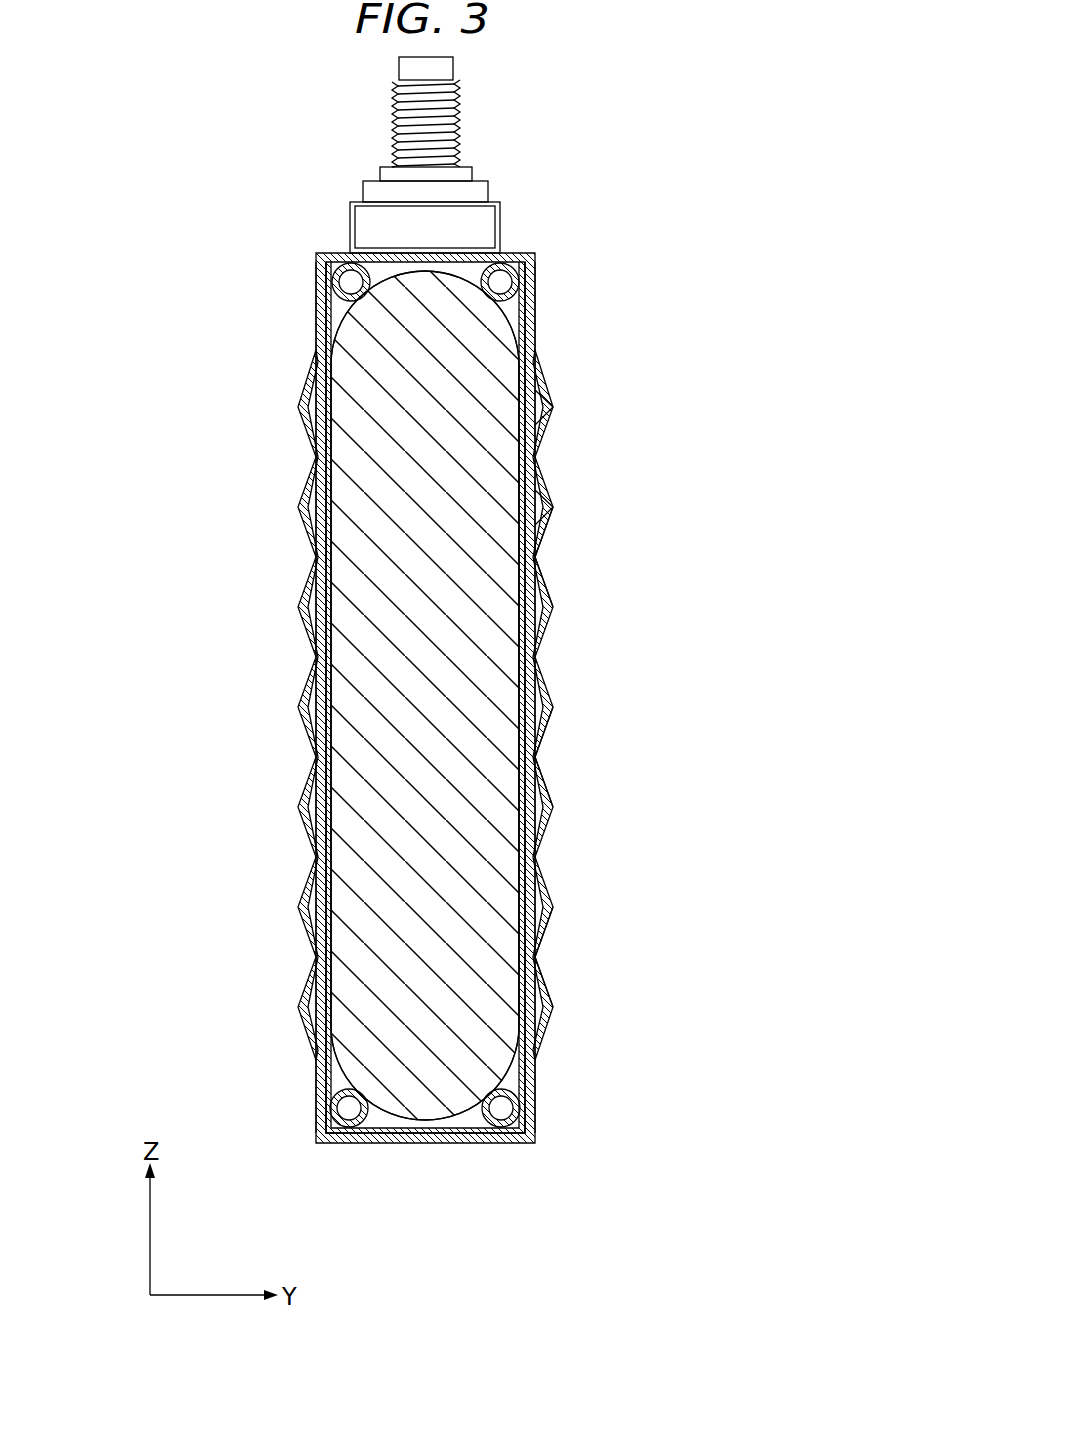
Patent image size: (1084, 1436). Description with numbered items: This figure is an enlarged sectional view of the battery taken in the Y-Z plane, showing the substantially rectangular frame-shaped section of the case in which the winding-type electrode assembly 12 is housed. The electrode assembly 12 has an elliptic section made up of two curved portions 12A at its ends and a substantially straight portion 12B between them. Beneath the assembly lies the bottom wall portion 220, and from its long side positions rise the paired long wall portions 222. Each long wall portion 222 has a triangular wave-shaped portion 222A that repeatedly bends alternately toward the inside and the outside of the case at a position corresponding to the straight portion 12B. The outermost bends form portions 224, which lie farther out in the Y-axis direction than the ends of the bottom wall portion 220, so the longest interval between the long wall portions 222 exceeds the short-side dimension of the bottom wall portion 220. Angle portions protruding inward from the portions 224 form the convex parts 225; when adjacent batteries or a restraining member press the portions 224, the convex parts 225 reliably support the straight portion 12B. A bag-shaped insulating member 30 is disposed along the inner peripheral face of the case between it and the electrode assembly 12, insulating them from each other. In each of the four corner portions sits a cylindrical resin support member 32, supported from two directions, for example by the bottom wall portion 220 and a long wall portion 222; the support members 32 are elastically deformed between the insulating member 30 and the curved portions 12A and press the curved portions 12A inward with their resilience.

The electrode assembly 12 is at (447, 266).
The curved portions 12A is at (318, 312).
The straight portion 12B is at (338, 520).
The insulating member 30 is at (325, 993).
The support members 32 is at (318, 303).
The bottom wall portion 220 is at (463, 1143).
The long wall portions 222 is at (318, 328).
The triangular wave-shaped portion 222A is at (688, 362).
The portions positioned on outermost side 224 is at (552, 513).
The convex parts 225 is at (552, 607).